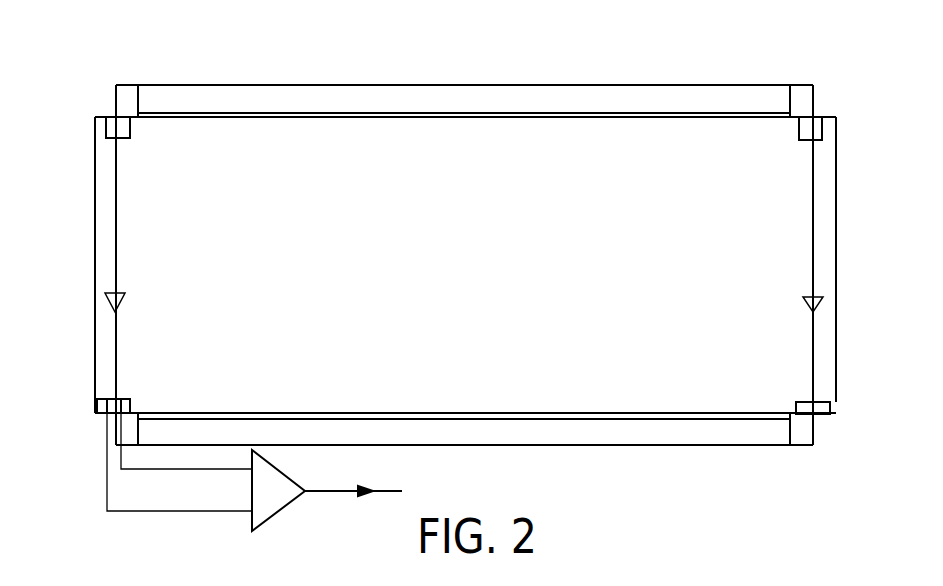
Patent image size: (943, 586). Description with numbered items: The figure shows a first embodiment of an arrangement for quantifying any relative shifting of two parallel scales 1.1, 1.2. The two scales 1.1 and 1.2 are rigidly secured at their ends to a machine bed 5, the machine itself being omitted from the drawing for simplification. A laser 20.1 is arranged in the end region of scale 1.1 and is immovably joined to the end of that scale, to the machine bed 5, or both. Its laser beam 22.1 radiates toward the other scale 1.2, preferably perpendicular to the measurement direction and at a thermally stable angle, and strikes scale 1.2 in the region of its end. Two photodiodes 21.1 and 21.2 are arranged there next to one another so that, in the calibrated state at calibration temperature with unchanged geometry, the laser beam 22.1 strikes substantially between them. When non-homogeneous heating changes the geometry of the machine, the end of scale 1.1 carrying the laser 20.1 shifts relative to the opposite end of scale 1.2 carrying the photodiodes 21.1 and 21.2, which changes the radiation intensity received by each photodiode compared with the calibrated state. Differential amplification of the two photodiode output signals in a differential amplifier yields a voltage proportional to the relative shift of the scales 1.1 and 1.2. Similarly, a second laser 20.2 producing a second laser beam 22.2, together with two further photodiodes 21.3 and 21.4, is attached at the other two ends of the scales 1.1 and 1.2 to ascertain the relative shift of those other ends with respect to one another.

The scale 1.1 is at (455, 102).
The scale 1.2 is at (643, 438).
The machine bed 5 is at (617, 148).
The laser 20.1 is at (123, 136).
The second laser 20.2 is at (807, 132).
The photodiode 21.1 is at (102, 398).
The photodiode 21.2 is at (130, 398).
The photodiode 21.3 is at (805, 400).
The photodiode 21.4 is at (827, 400).
The laser beam 22.1 is at (116, 227).
The second laser beam 22.2 is at (813, 235).